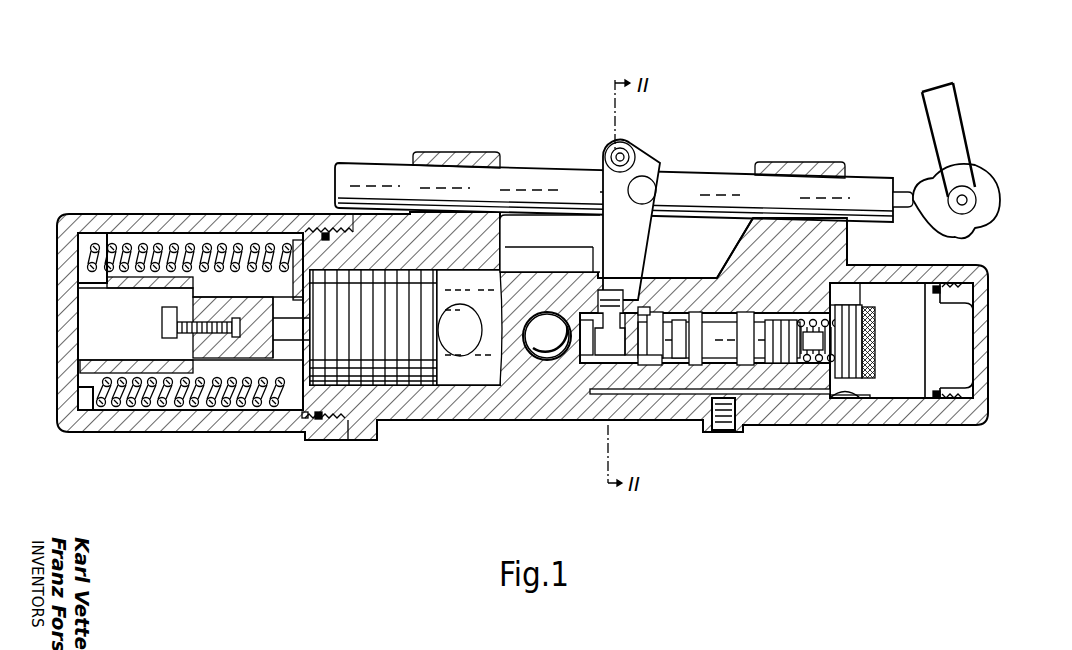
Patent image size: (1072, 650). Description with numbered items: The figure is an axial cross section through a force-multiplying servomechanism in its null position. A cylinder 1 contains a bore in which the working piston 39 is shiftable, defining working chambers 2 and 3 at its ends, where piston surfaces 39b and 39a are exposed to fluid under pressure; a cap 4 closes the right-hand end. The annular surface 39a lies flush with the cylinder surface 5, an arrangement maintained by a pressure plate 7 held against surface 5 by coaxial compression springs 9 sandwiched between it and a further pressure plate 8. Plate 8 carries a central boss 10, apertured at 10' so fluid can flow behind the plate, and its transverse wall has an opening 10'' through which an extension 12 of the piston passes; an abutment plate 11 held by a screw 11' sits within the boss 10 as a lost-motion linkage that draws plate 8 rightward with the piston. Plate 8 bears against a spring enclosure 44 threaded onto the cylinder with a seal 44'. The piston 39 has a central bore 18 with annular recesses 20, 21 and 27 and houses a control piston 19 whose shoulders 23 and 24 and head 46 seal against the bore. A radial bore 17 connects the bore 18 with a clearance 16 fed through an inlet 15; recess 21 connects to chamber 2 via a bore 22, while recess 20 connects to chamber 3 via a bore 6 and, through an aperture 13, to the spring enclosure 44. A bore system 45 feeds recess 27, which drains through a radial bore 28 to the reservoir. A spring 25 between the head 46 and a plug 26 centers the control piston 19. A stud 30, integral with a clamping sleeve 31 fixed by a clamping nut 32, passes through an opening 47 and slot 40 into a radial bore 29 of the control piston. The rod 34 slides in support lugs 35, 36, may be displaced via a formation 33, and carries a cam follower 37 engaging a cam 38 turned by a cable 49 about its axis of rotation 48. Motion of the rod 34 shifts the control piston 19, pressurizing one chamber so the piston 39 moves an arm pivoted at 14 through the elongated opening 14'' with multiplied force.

The cylinder 1 is at (888, 420).
The working chamber 2 is at (915, 400).
The working chamber 3 is at (318, 236).
The cap 4 is at (985, 383).
The surface 5 is at (316, 442).
The bore 6 is at (479, 292).
The pressure plate 7 is at (296, 248).
The pressure plate 8 is at (87, 433).
The compression springs 9 is at (152, 407).
The central boss 10 is at (59, 335).
The aperture 10' is at (135, 195).
The opening 10'' is at (143, 286).
The abutment plate 11 is at (178, 335).
The screw 11' is at (140, 316).
The extension 12 is at (215, 407).
The aperture 13 is at (251, 327).
The pivot 14 is at (421, 363).
The elongated opening 14'' is at (446, 367).
The inlet 15 is at (724, 434).
The clearance 16 is at (745, 426).
The radial bore 17 is at (697, 396).
The central bore 18 is at (762, 245).
The control piston 19 is at (680, 318).
The annular recess 20 is at (735, 316).
The annular recess 21 is at (656, 311).
The bore 22 is at (838, 400).
The shoulder 23 is at (697, 312).
The shoulder 24 is at (747, 312).
The spring 25 is at (812, 376).
The plug 26 is at (878, 345).
The annular recess 27 is at (640, 394).
The radial bore 28 is at (634, 312).
The radial bore 29 is at (562, 362).
The stud 30 is at (578, 262).
The clamping sleeve 31 is at (603, 210).
The clamping nut 32 is at (622, 150).
The formation 33 is at (653, 182).
The rod 34 is at (867, 190).
The support lug 35 is at (800, 170).
The support lug 36 is at (445, 152).
The cam follower 37 is at (903, 192).
The cam 38 is at (1000, 182).
The working piston 39 is at (862, 303).
The annular piston surface 39a is at (304, 428).
The piston surface 39b is at (866, 402).
The slot 40 is at (525, 262).
The spring enclosure 44 is at (220, 286).
The seal 44' is at (334, 452).
The system of bores 45 is at (668, 395).
The head 46 is at (797, 412).
The opening 47 is at (612, 278).
The axis of rotation 48 is at (972, 204).
The cable 49 is at (957, 88).